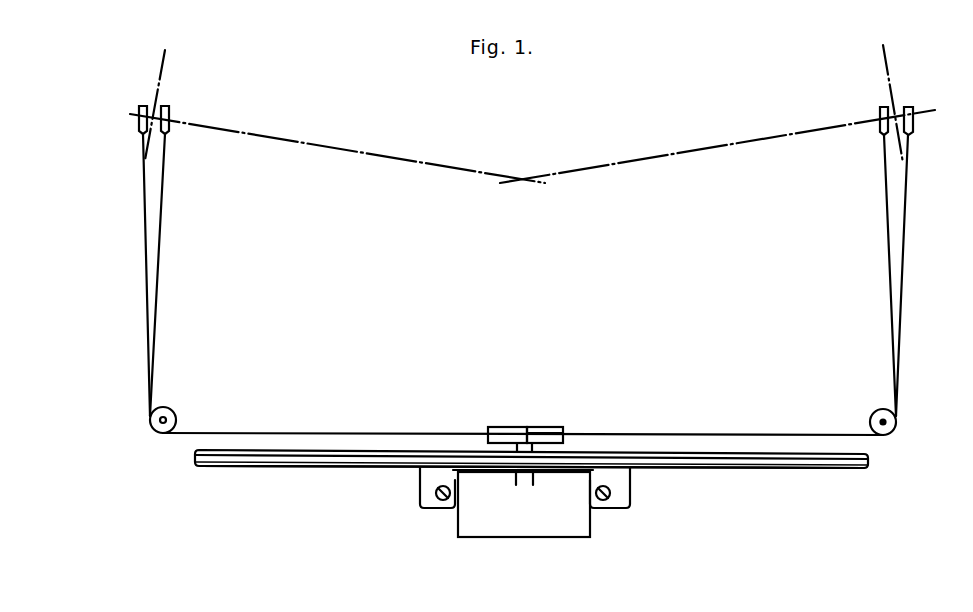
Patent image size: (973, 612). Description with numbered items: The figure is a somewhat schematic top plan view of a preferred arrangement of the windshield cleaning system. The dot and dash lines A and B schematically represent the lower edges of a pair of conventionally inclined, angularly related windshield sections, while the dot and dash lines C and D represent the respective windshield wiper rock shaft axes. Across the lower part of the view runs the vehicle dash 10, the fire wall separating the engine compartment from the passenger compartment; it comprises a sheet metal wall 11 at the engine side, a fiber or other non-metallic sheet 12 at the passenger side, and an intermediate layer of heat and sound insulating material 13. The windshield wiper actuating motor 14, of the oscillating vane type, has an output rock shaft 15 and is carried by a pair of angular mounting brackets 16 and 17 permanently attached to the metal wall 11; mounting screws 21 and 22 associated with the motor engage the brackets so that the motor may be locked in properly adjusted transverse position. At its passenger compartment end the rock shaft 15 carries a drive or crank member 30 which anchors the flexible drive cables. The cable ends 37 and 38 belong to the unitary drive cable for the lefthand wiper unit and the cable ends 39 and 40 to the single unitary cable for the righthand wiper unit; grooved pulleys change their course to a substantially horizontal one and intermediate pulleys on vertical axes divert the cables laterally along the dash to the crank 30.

The vehicle dash 10 is at (531, 452).
The sheet metal wall 11 is at (723, 468).
The non-metallic sheet 12 is at (678, 455).
The intermediate layer of heat and sound insulating material 13 is at (337, 460).
The windshield wiper actuating motor 14 is at (543, 540).
The output rock shaft 15 is at (522, 438).
The angular mounting bracket 16 is at (423, 498).
The angular mounting bracket 17 is at (630, 510).
The mounting screw 21 is at (445, 505).
The mounting screw 22 is at (608, 505).
The drive or crank member 30 is at (562, 440).
The drive cable end 37 is at (888, 225).
The drive cable end 38 is at (905, 243).
The drive cable end 39 is at (160, 230).
The drive cable end 40 is at (145, 238).
The dot and dash line A is at (323, 143).
The dot and dash line B is at (652, 157).
The dot and dash line C is at (160, 80).
The dot and dash line D is at (886, 63).